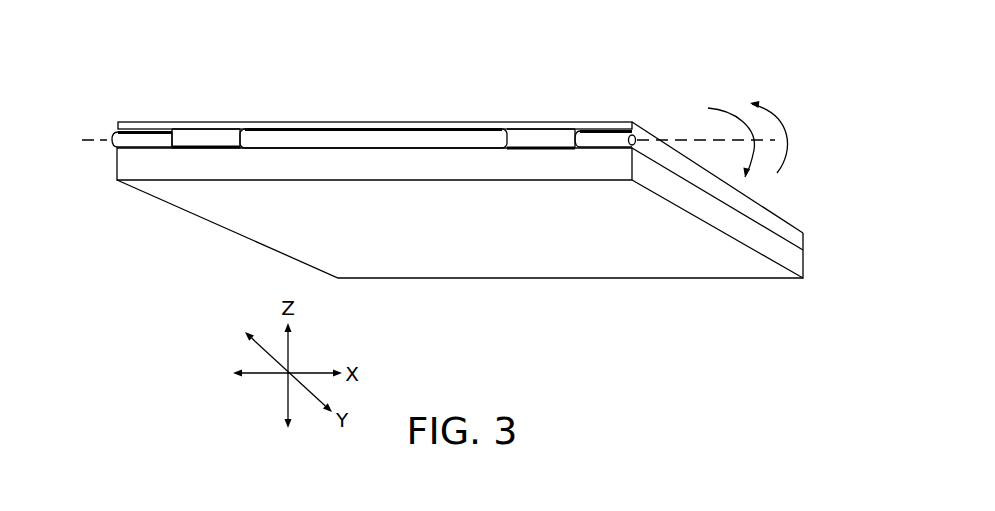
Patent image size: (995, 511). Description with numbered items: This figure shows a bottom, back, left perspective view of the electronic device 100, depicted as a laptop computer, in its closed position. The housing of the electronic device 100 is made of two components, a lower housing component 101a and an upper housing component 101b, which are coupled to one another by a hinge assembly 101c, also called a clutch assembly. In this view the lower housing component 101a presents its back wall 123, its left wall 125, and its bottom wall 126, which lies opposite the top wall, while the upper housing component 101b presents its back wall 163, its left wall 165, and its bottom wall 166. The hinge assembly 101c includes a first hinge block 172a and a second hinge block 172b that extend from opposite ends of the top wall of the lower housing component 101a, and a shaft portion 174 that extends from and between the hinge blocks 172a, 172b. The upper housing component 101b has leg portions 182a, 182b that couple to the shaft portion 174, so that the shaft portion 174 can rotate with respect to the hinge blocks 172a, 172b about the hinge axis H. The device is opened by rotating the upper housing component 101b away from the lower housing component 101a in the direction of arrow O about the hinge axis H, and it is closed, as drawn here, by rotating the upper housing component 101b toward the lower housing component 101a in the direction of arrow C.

The electronic device 100 is at (477, 336).
The lower housing component 101a is at (208, 228).
The upper housing component 101b is at (106, 117).
The hinge assembly 101c is at (103, 146).
The back wall 123 is at (122, 160).
The left wall 125 is at (792, 258).
The bottom wall 126 is at (688, 268).
The back wall 163 is at (522, 130).
The left wall 165 is at (790, 241).
The bottom wall 166 is at (176, 120).
The first hinge block 172a is at (600, 138).
The second hinge block 172b is at (153, 140).
The shaft portion 174 is at (357, 138).
The leg portion 182a is at (550, 133).
The leg portion 182b is at (223, 134).
The hinge axis H is at (670, 138).
The arrow C is at (730, 108).
The arrow O is at (778, 107).